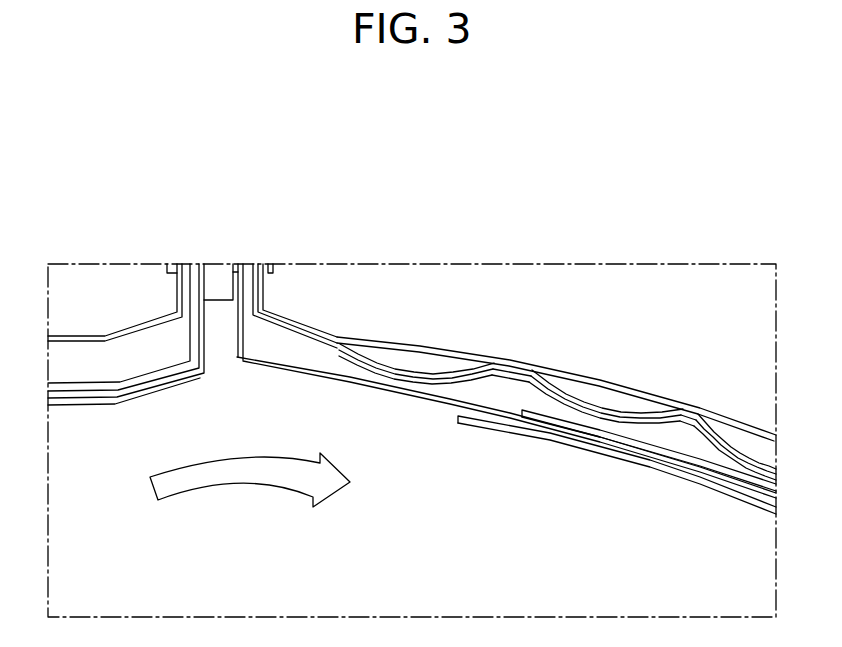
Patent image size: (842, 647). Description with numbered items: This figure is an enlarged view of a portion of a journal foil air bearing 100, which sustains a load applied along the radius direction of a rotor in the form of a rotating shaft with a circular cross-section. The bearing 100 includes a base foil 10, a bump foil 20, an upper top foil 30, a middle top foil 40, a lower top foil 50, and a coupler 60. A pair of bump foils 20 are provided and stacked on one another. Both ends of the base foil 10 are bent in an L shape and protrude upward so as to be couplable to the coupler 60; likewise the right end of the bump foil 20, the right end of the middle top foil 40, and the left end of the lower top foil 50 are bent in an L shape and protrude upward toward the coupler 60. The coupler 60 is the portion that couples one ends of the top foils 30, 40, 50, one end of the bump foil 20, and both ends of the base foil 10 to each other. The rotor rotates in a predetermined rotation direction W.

The journal foil air bearing 100 is at (555, 225).
The coupler 60 is at (287, 253).
The base foil 10 is at (587, 376).
The bump foil 20 is at (618, 421).
The upper top foil 30 is at (697, 482).
The middle top foil 40 is at (627, 447).
The lower top foil 50 is at (550, 420).
The rotation direction W is at (242, 483).